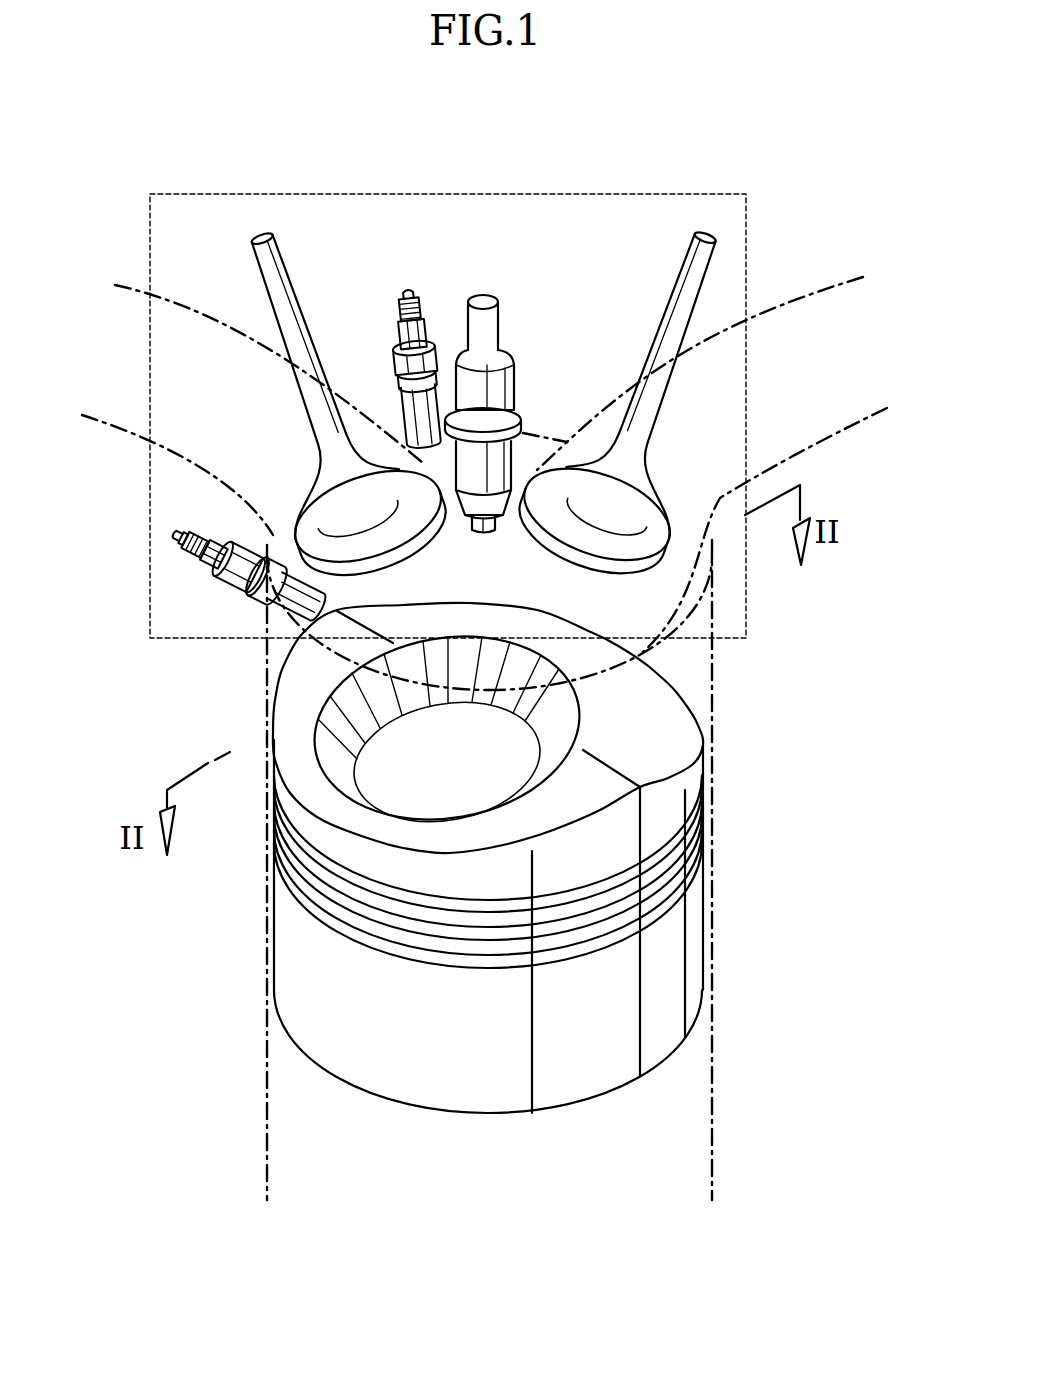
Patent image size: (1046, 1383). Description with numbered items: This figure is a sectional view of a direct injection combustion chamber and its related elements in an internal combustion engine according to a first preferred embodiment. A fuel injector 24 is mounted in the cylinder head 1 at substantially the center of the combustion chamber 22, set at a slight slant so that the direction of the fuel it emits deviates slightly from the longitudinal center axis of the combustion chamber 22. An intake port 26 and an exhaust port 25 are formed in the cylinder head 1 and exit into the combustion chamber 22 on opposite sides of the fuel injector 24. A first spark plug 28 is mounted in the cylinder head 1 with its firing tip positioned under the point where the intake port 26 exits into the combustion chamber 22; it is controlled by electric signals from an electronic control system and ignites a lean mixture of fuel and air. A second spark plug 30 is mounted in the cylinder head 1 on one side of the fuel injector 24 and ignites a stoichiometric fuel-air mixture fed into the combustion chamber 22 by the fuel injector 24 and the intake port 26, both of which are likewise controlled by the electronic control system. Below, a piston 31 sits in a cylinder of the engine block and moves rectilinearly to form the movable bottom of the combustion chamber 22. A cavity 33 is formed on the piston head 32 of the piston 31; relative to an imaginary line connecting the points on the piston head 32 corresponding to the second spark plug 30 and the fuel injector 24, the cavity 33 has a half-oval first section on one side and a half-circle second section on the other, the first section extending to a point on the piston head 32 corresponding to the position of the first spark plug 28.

The cylinder head 1 is at (665, 194).
The combustion chamber 22 is at (608, 602).
The fuel injector 24 is at (510, 357).
The exhaust port 25 is at (795, 445).
The intake port 26 is at (186, 446).
The first spark plug 28 is at (184, 554).
The second spark plug 30 is at (420, 313).
The piston 31 is at (667, 975).
The piston head 32 is at (657, 752).
The cavity 33 is at (345, 732).